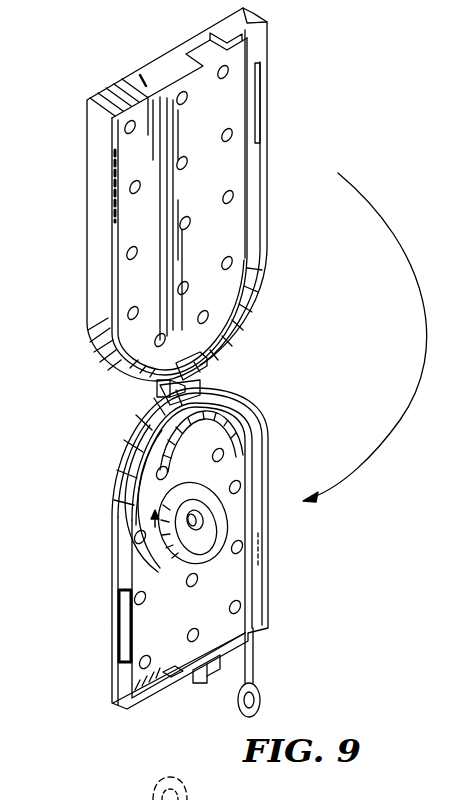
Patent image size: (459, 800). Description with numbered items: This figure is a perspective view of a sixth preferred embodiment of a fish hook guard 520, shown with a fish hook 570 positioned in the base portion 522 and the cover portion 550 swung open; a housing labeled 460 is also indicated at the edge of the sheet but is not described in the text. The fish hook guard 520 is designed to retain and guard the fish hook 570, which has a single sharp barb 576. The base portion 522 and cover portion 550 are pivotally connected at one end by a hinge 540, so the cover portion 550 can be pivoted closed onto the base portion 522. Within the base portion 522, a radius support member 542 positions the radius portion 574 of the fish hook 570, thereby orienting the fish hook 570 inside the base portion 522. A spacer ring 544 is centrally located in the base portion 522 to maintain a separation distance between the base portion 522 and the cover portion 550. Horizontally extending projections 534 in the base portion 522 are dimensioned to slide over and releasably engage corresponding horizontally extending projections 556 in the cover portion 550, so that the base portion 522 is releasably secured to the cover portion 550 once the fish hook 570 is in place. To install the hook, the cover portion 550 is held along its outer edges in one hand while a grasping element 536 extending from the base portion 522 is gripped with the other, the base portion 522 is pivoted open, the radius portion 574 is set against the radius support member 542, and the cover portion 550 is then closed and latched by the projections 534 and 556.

The reel housing 460 is at (0, 114).
The fish hook guard 520 is at (100, 430).
The base portion 522 is at (282, 625).
The horizontally extending projections 534 is at (258, 563).
The grasping element 536 is at (212, 673).
The hinge 540 is at (160, 397).
The radius support member 542 is at (228, 432).
The spacer ring 544 is at (212, 556).
The cover portion 550 is at (276, 78).
The horizontally extending projections 556 is at (152, 90).
The fish hook 570 is at (258, 668).
The radius portion 574 is at (148, 493).
The single sharp barb 576 is at (160, 570).